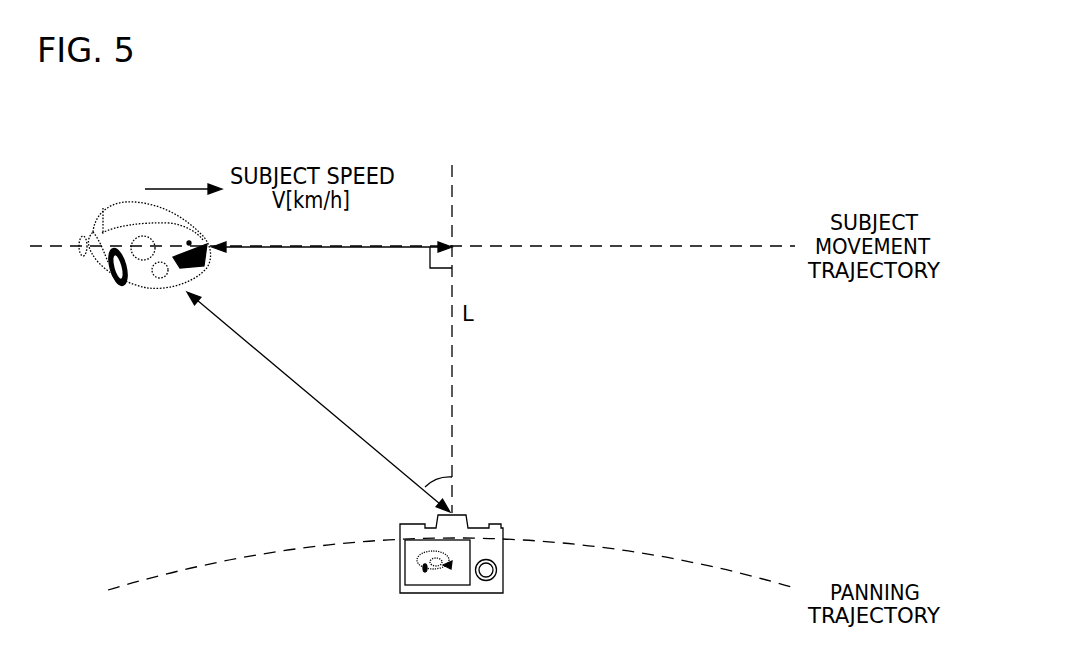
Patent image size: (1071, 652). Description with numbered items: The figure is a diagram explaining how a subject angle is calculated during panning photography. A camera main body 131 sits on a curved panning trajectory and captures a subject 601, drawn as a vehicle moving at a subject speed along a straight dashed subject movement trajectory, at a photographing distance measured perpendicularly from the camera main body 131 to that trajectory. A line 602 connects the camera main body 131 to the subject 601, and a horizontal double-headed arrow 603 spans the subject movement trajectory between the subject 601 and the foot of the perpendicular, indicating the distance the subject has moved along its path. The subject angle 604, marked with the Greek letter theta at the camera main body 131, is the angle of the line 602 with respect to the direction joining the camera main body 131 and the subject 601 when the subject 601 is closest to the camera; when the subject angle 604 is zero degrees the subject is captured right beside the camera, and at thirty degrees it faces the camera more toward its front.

The subject 601 is at (113, 202).
The line connecting the camera main body and the subject 602 is at (270, 367).
The distance along subject movement trajectory 603 is at (332, 249).
The subject angle 604 is at (428, 484).
The camera main body 131 is at (494, 522).